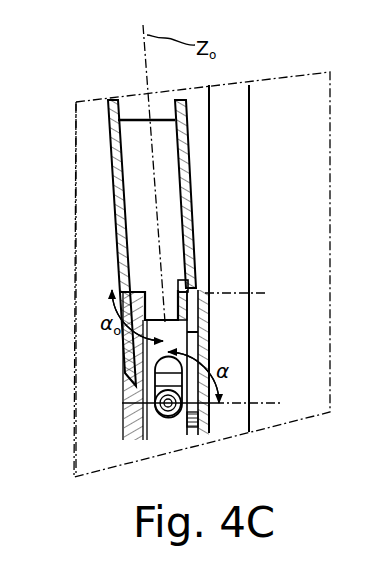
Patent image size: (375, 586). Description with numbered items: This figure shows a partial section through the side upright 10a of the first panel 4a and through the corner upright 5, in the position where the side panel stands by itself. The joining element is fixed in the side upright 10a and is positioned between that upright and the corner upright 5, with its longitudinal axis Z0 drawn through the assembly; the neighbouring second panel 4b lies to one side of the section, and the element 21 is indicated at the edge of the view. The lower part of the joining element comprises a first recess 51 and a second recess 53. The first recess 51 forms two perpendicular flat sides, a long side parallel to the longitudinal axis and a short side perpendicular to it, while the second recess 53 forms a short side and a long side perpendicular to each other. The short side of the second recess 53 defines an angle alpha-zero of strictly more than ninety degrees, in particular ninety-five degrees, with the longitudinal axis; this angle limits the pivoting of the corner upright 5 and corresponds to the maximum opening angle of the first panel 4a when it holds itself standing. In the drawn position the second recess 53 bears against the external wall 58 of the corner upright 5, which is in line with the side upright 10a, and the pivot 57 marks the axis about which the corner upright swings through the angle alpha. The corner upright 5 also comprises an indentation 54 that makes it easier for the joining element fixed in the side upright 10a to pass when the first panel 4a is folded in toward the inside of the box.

The first panel 4a is at (98, 102).
The second arm part 4b is at (300, 118).
The side upright 10a is at (118, 120).
The housing 21 is at (38, 289).
The second recess 53 is at (136, 284).
The first recess 51 is at (184, 291).
The indentation 54 is at (198, 313).
The corner upright 5 is at (140, 396).
The external wall 58 is at (138, 412).
The pivot pin 57 is at (172, 418).